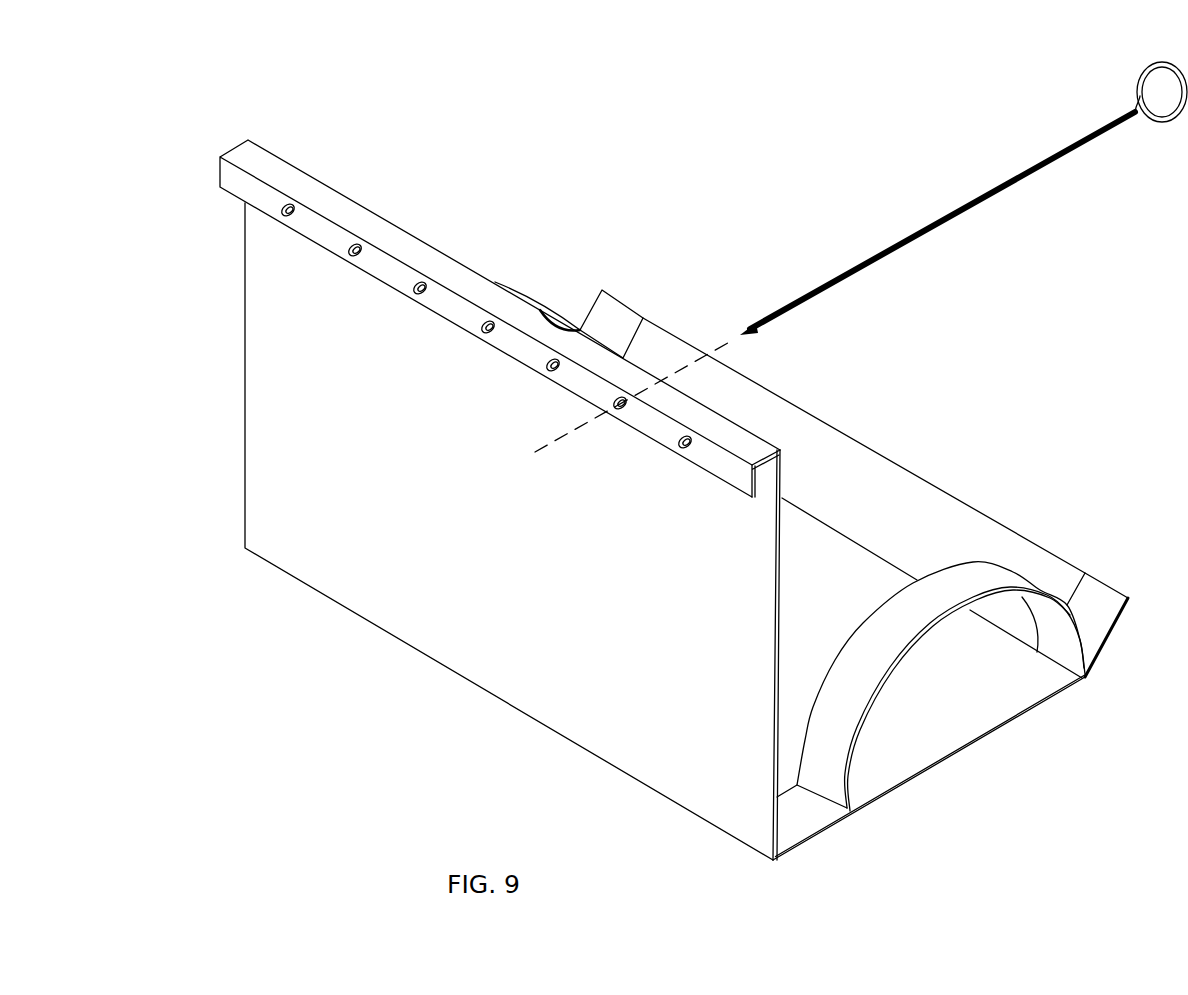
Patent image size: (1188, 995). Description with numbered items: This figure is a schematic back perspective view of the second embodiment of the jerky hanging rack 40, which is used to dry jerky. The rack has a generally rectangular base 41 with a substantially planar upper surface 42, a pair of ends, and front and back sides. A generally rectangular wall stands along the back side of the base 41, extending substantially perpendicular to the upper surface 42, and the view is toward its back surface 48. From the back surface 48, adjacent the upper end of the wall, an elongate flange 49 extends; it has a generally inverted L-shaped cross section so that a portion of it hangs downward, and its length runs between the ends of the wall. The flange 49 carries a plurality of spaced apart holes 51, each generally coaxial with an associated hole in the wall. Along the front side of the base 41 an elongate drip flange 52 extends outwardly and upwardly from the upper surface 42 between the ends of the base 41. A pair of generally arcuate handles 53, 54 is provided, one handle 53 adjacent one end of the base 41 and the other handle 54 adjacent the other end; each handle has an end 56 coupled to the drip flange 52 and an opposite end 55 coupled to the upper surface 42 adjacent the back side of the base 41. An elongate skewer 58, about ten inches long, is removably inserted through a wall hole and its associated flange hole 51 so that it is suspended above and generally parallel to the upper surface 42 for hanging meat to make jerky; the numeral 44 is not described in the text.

The second embodiment of the jerky hanging rack 40 is at (211, 131).
The base 41 is at (952, 768).
The upper surface of the base 42 is at (985, 718).
The back wall assembly 44 is at (231, 332).
The back surface of the wall 48 is at (265, 383).
The flange 49 is at (220, 172).
The holes of the flange 51 is at (291, 208).
The drip flange 52 is at (950, 513).
The handle 53 is at (978, 580).
The handle 54 is at (513, 285).
The end of the handle 55 is at (805, 820).
The end of the handle 56 is at (612, 312).
The skewer 58 is at (952, 214).